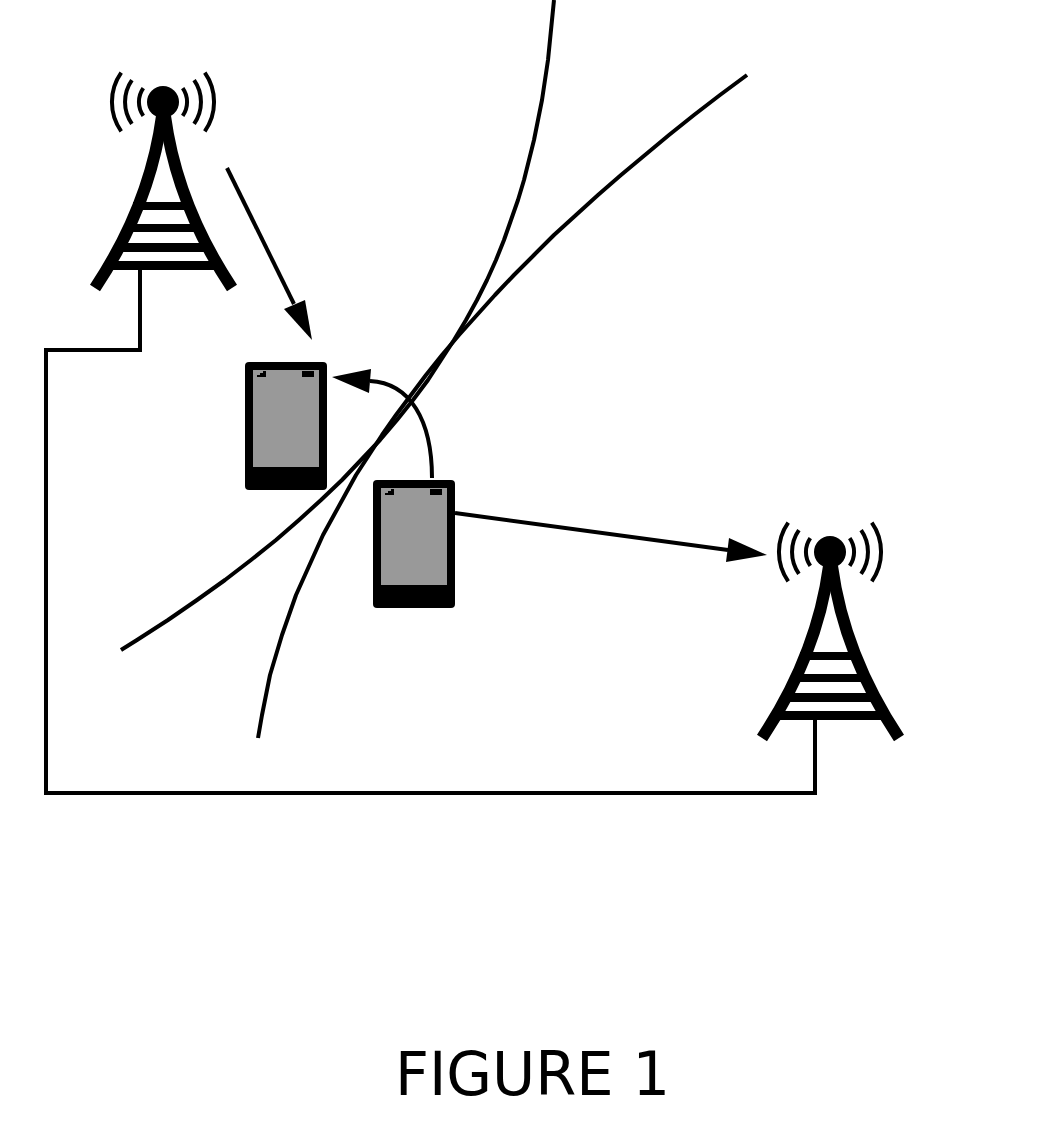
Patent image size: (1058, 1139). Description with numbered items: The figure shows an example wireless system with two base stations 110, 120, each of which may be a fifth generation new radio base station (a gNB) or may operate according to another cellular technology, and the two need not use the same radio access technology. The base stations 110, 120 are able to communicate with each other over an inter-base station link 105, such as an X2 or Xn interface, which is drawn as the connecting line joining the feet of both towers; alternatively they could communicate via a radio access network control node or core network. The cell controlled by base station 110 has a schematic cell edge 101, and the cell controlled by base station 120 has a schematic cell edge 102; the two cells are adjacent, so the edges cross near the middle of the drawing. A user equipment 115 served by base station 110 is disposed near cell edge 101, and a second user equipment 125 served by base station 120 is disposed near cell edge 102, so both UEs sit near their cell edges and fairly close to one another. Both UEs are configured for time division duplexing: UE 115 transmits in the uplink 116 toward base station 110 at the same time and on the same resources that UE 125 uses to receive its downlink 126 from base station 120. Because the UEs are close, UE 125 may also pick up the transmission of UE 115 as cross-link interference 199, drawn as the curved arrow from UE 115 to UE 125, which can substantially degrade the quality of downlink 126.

The cell edge 101 is at (713, 93).
The cell edge 102 is at (533, 133).
The inter-base station link 105 is at (445, 793).
The base station 110 is at (873, 667).
The user equipment 115 is at (423, 610).
The uplink 116 is at (618, 537).
The base station 120 is at (120, 232).
The user equipment 125 is at (246, 440).
The downlink 126 is at (262, 242).
The cross-link interference 199 is at (433, 440).